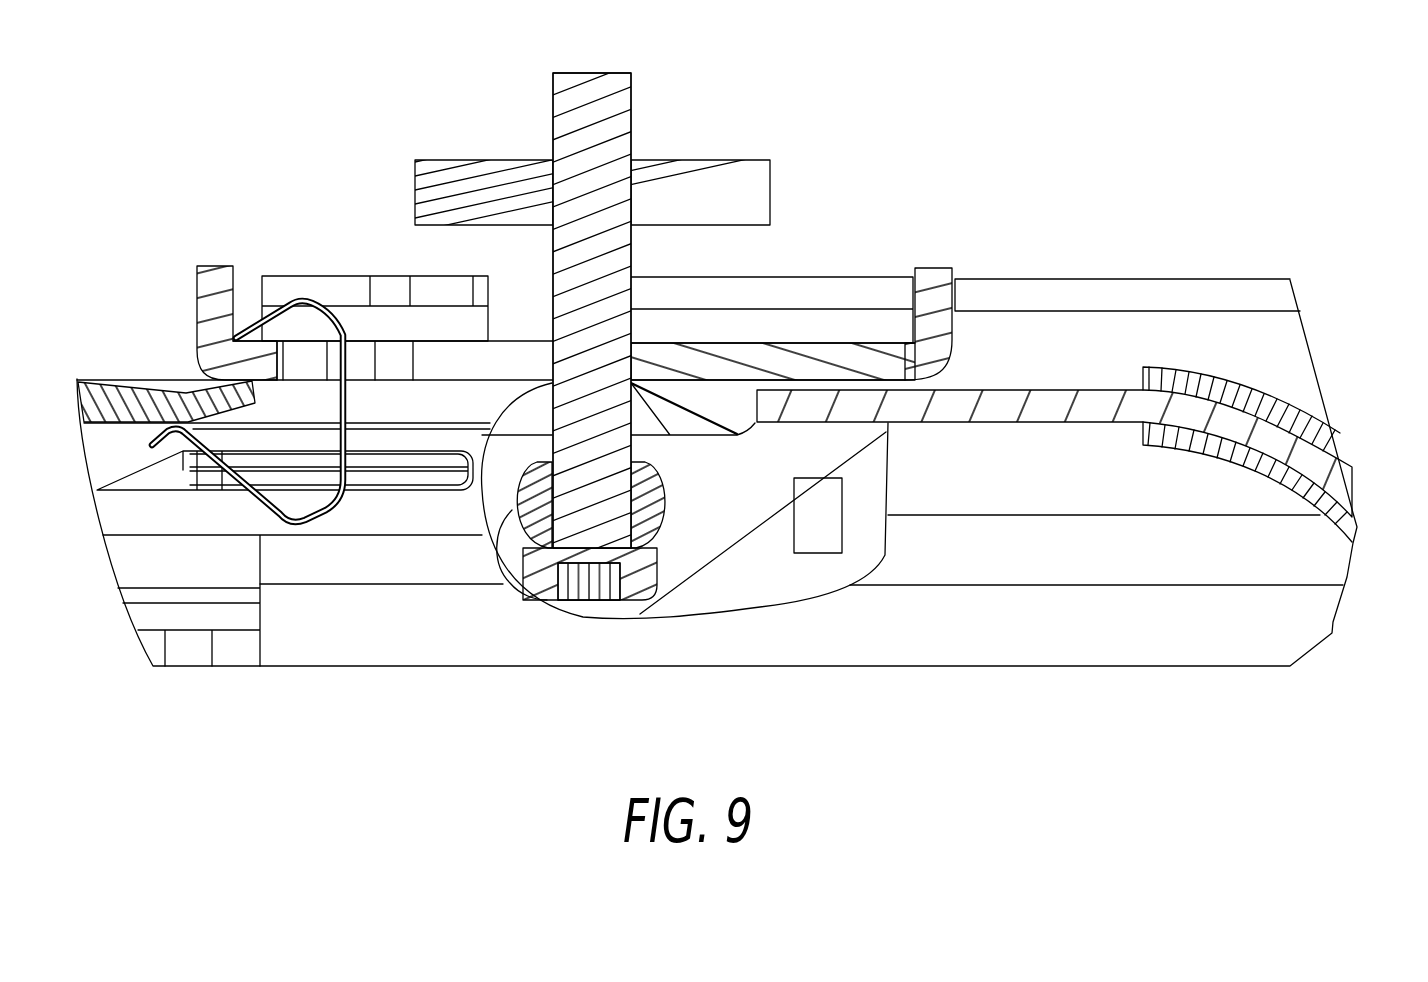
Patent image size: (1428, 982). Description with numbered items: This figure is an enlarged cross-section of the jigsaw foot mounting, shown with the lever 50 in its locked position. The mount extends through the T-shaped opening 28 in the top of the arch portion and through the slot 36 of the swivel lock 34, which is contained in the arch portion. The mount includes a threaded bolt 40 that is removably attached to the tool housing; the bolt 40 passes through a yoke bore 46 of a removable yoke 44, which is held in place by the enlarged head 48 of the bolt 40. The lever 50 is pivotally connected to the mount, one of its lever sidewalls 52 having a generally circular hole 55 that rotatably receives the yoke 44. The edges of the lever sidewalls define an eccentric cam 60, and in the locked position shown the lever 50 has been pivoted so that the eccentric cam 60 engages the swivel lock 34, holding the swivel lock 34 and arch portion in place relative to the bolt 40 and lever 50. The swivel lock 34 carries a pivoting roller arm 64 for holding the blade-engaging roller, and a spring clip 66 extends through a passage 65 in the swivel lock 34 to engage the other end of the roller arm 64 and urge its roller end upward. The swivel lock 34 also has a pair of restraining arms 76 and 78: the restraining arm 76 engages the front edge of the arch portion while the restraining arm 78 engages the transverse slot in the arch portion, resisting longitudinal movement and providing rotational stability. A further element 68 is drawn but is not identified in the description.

The T-shaped opening 28 is at (430, 290).
The swivel lock 34 is at (825, 367).
The slot 36 is at (452, 360).
The threaded bolt 40 is at (598, 110).
The removable yoke 44 is at (640, 510).
The yoke bore 46 is at (505, 585).
The enlarged head 48 is at (637, 570).
The lever 50 is at (1100, 403).
The lever sidewall 52 is at (737, 512).
The circular hole 55 is at (663, 510).
The eccentric cam 60 is at (672, 415).
The pivoting roller arm 64 is at (125, 407).
The passage 65 is at (353, 357).
The spring clip 66 is at (297, 302).
The stop 68 is at (823, 523).
The restraining arm 76 is at (213, 266).
The restraining arm 78 is at (935, 280).